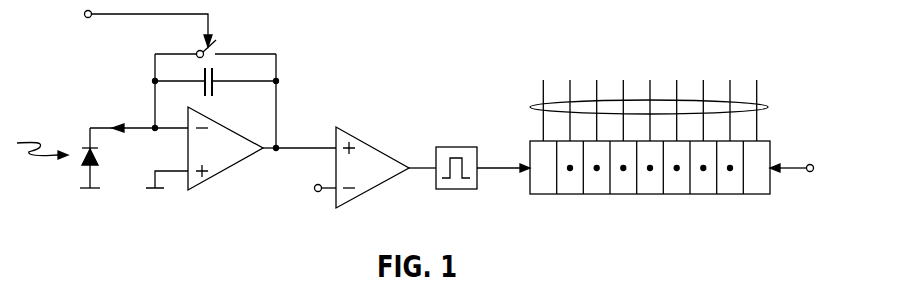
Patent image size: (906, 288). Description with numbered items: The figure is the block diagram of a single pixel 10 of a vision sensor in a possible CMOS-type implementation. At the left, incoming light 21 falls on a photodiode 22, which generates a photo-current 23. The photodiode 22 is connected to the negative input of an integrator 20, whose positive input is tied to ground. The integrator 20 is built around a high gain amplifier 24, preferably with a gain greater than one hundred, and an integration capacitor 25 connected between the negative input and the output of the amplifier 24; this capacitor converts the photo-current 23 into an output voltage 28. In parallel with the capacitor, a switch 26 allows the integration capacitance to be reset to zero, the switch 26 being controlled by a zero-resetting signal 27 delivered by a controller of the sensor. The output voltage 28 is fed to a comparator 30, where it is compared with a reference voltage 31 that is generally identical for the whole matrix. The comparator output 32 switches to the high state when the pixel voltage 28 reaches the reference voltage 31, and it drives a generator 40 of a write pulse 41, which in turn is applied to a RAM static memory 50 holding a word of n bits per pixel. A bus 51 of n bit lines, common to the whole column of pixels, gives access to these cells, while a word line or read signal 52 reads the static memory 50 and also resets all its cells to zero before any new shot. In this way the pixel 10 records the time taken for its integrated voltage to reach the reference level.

The pixel 10 is at (372, 42).
The integrator 20 is at (191, 209).
The light L 21 is at (40, 158).
The photodiode 22 is at (99, 152).
The photo-current Iphd 23 is at (118, 92).
The high gain amplifier 24 is at (245, 170).
The integration capacitor Cp 25 is at (216, 72).
The switch 26 is at (201, 46).
The zero-resetting signal RST 27 is at (57, 27).
The voltage Vp 28 is at (302, 117).
The comparator 30 is at (380, 150).
The reference voltage Vref 31 is at (298, 205).
The output Vc 32 is at (425, 172).
The generator of a write pulse 40 is at (448, 146).
The write pulse WR 41 is at (505, 172).
The RAM static memory 50 is at (572, 196).
The bus 51 is at (530, 107).
The WL (word line) or RD (read) signal 52 is at (800, 178).